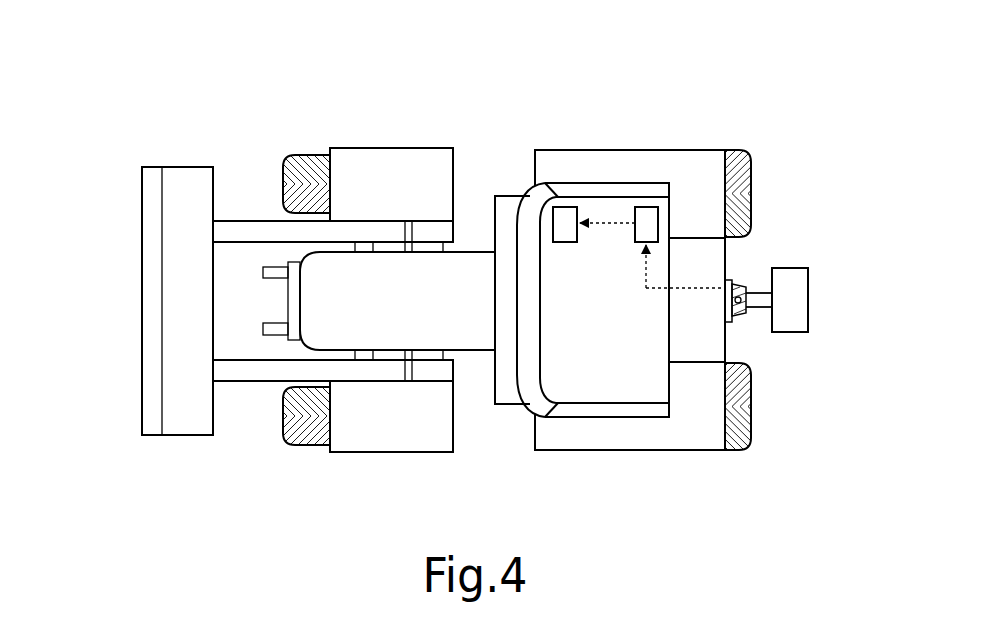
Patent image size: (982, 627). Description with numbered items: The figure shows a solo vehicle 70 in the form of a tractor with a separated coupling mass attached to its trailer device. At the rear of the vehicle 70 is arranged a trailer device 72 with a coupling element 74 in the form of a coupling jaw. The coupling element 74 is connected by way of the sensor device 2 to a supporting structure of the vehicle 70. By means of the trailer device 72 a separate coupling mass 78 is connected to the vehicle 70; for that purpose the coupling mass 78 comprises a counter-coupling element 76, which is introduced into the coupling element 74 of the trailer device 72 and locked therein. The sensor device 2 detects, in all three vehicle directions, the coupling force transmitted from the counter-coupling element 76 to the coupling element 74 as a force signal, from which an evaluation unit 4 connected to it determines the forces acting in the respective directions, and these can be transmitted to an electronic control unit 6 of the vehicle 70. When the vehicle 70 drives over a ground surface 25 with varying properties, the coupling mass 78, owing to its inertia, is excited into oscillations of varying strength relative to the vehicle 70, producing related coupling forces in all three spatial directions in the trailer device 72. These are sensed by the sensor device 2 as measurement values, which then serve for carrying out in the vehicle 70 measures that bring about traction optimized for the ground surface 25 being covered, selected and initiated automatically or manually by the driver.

The vehicle 70 is at (461, 228).
The ground surface 25 is at (84, 308).
The electronic control unit 6 is at (563, 205).
The evaluation unit 4 is at (643, 205).
The sensor device 2 is at (723, 333).
The trailer device 72 is at (795, 266).
The coupling element 74 is at (738, 322).
The counter-coupling element 76 is at (758, 292).
The coupling mass 78 is at (809, 299).